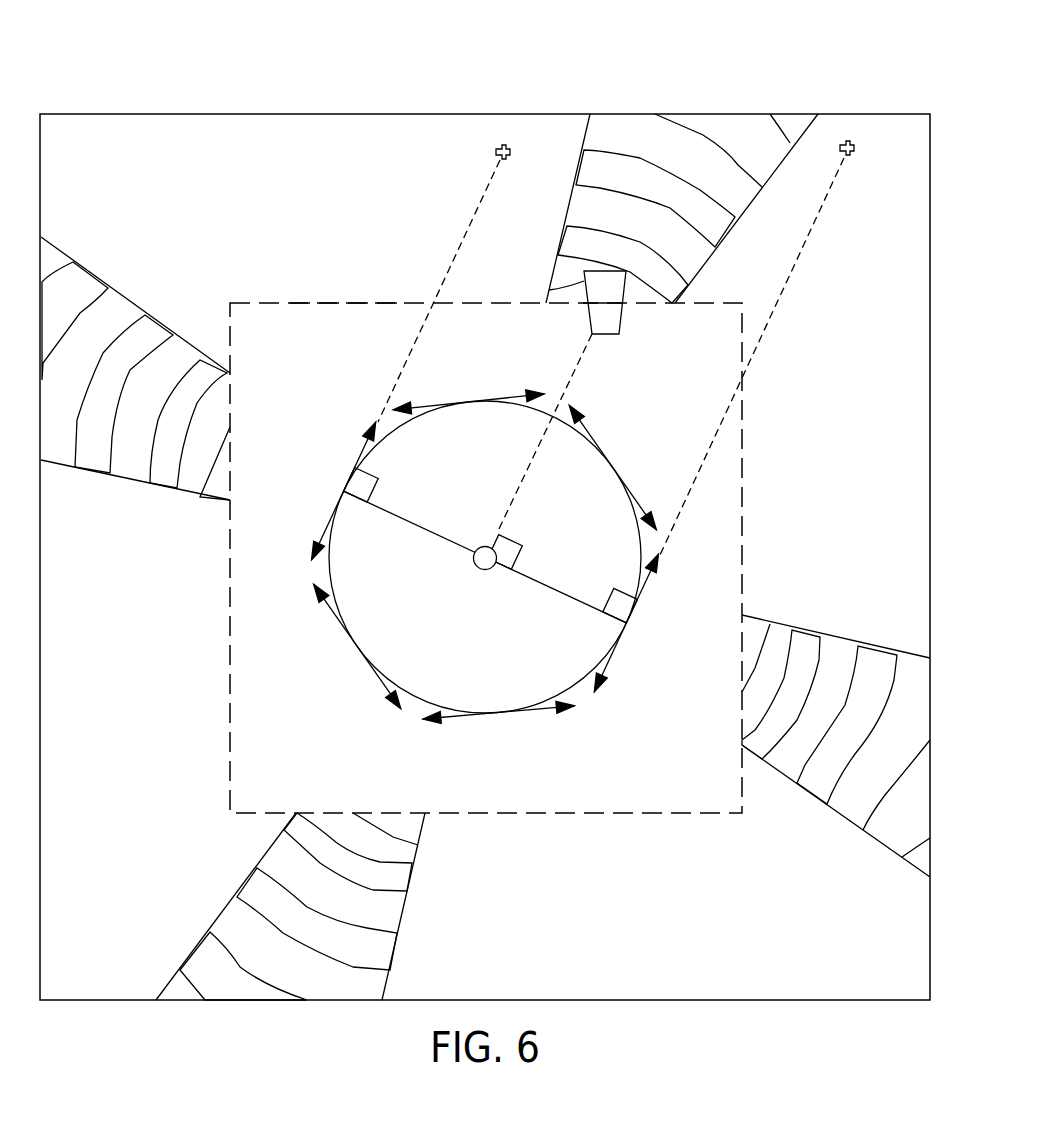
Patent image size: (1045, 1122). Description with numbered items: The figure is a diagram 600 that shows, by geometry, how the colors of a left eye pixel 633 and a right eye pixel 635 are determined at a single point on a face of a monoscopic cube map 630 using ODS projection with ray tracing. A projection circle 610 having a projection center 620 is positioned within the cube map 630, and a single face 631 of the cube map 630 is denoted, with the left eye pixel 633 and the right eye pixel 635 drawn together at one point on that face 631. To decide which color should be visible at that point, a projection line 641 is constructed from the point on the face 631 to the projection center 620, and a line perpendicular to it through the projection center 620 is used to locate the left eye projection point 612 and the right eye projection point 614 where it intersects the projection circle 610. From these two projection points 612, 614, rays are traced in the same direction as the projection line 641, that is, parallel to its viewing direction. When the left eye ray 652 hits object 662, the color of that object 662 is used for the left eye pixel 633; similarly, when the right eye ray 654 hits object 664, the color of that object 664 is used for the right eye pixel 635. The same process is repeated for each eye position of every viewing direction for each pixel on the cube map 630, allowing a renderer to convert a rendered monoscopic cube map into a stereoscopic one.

The diagram 600 is at (237, 64).
The projection circle 610 is at (412, 708).
The left eye projection point 612 is at (344, 492).
The right eye projection point 614 is at (625, 628).
The projection center 620 is at (483, 570).
The cube map 630 is at (582, 822).
The face 631 is at (343, 306).
The left eye pixel 633 is at (626, 290).
The right eye pixel 635 is at (584, 318).
The projection line 641 is at (500, 520).
The left eye ray 652 is at (360, 460).
The right eye ray 654 is at (638, 597).
The object 662 is at (494, 151).
The object 664 is at (848, 160).